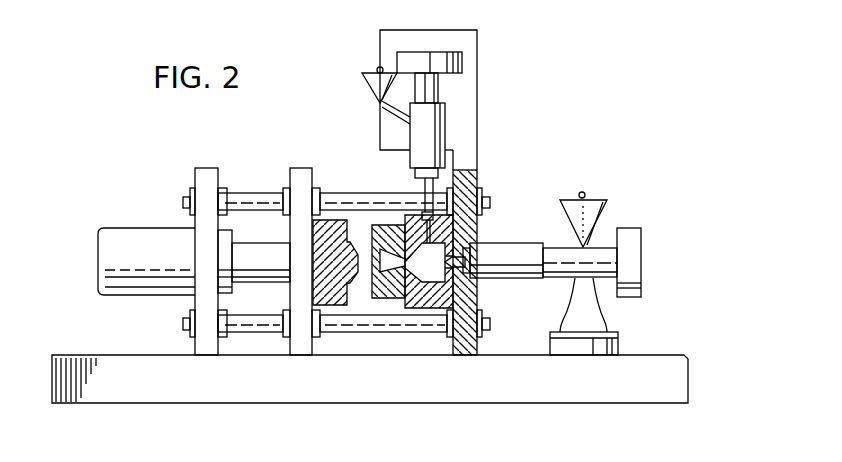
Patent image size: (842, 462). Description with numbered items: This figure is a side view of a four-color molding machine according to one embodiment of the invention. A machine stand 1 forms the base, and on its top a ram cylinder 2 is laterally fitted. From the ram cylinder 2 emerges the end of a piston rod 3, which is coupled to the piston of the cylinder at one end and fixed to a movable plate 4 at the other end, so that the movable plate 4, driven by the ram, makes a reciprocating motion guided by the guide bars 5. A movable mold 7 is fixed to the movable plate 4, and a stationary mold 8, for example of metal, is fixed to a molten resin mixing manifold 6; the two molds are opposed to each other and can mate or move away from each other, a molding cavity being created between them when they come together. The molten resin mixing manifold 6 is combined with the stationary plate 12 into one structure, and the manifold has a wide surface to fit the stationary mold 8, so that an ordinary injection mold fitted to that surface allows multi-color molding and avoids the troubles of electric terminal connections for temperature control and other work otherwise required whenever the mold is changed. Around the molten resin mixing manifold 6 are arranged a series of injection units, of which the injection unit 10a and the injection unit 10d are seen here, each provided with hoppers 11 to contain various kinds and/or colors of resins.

The machine stand 1 is at (82, 363).
The ram cylinder 2 is at (130, 228).
The piston rod 3 is at (260, 250).
The movable plate 4 is at (300, 172).
The guide bars 5 is at (262, 322).
The molten resin mixing manifold 6 is at (427, 303).
The movable mold 7 is at (328, 222).
The stationary mold 8 is at (380, 232).
The injection unit 10a is at (612, 265).
The injection unit 10d is at (462, 63).
The hoppers 11 is at (370, 80).
The stationary plate 12 is at (476, 176).